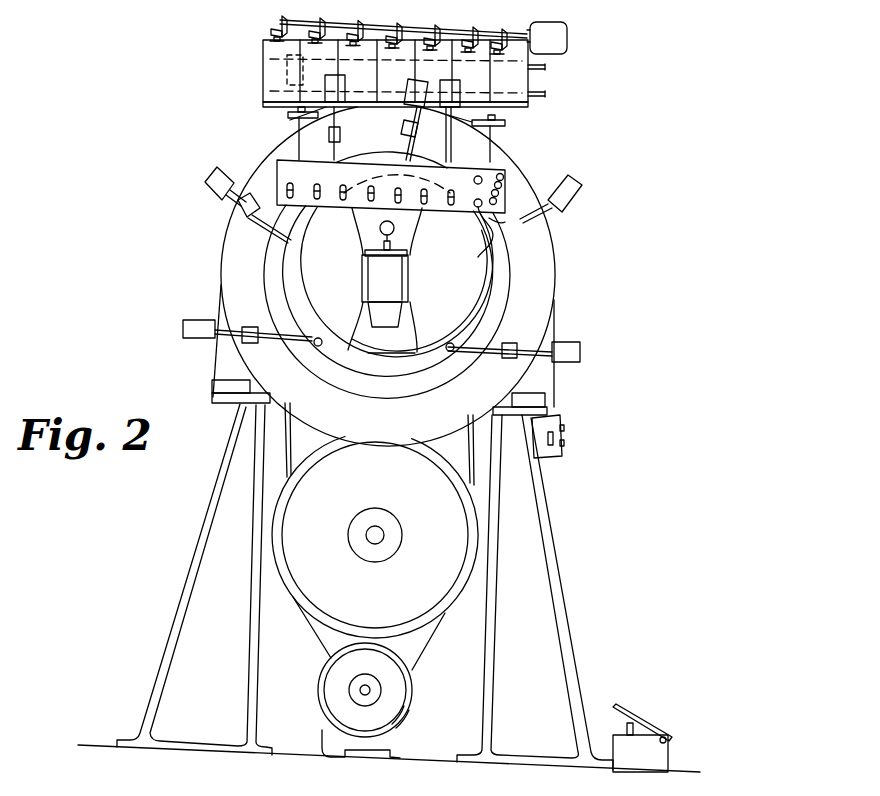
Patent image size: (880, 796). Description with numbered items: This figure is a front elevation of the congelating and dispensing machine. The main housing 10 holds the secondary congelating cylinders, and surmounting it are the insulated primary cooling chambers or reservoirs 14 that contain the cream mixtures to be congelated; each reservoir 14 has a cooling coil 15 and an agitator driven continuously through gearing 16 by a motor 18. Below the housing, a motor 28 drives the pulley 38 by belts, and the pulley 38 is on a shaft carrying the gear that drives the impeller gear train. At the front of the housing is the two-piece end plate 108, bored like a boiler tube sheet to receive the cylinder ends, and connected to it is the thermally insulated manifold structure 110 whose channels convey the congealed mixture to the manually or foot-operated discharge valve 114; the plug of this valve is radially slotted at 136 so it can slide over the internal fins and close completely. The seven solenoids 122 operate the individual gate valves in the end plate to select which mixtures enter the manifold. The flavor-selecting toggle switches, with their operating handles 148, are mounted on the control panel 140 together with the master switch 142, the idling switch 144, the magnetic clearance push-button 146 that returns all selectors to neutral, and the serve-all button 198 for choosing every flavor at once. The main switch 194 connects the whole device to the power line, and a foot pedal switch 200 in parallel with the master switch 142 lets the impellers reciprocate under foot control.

The main housing 10 is at (554, 246).
The primary cooling chambers or reservoirs 14 is at (280, 70).
The cooling coil 15 is at (547, 94).
The gearing 16 is at (281, 20).
The motor 18 is at (566, 40).
The motor 28 is at (410, 694).
The pulley 38 is at (414, 597).
The end plate 108 is at (482, 306).
The manifold structure 110 is at (478, 260).
The discharge valve 114 is at (363, 277).
The solenoids 122 is at (415, 90).
The slots 136 is at (408, 254).
The control panel 140 is at (396, 148).
The master switch 142 is at (507, 172).
The idling switch 144 is at (496, 205).
The magnetic clearance push-button 146 is at (484, 252).
The operating handle 148 is at (317, 186).
The main switch 194 is at (560, 420).
The serve-all button 198 is at (478, 176).
The foot pedal switch 200 is at (645, 722).